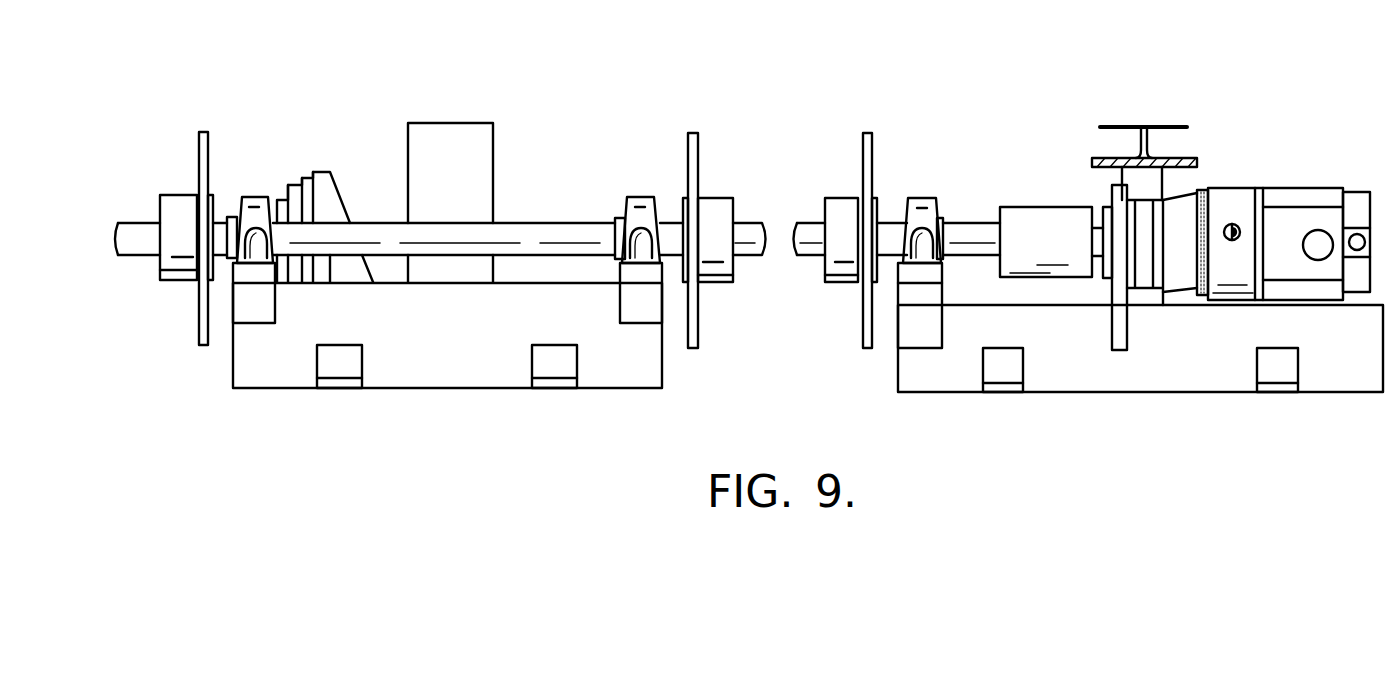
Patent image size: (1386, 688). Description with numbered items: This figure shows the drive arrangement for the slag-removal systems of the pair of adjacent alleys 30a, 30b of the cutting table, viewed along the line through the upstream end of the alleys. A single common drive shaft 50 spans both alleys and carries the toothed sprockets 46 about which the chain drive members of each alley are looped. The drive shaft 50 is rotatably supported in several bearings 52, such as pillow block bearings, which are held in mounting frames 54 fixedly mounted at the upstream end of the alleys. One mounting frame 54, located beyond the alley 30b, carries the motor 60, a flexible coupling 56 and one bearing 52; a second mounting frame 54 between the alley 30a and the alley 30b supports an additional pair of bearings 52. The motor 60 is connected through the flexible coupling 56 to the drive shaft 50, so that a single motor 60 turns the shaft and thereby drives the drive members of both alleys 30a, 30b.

The alley 30a is at (91, 155).
The alley 30b is at (778, 145).
The toothed sprocket 46 is at (198, 323).
The drive shaft 50 is at (142, 257).
The bearing 52 is at (258, 195).
The mounting frame 54 is at (443, 375).
The flexible coupling 56 is at (1043, 217).
The motor 60 is at (1300, 218).